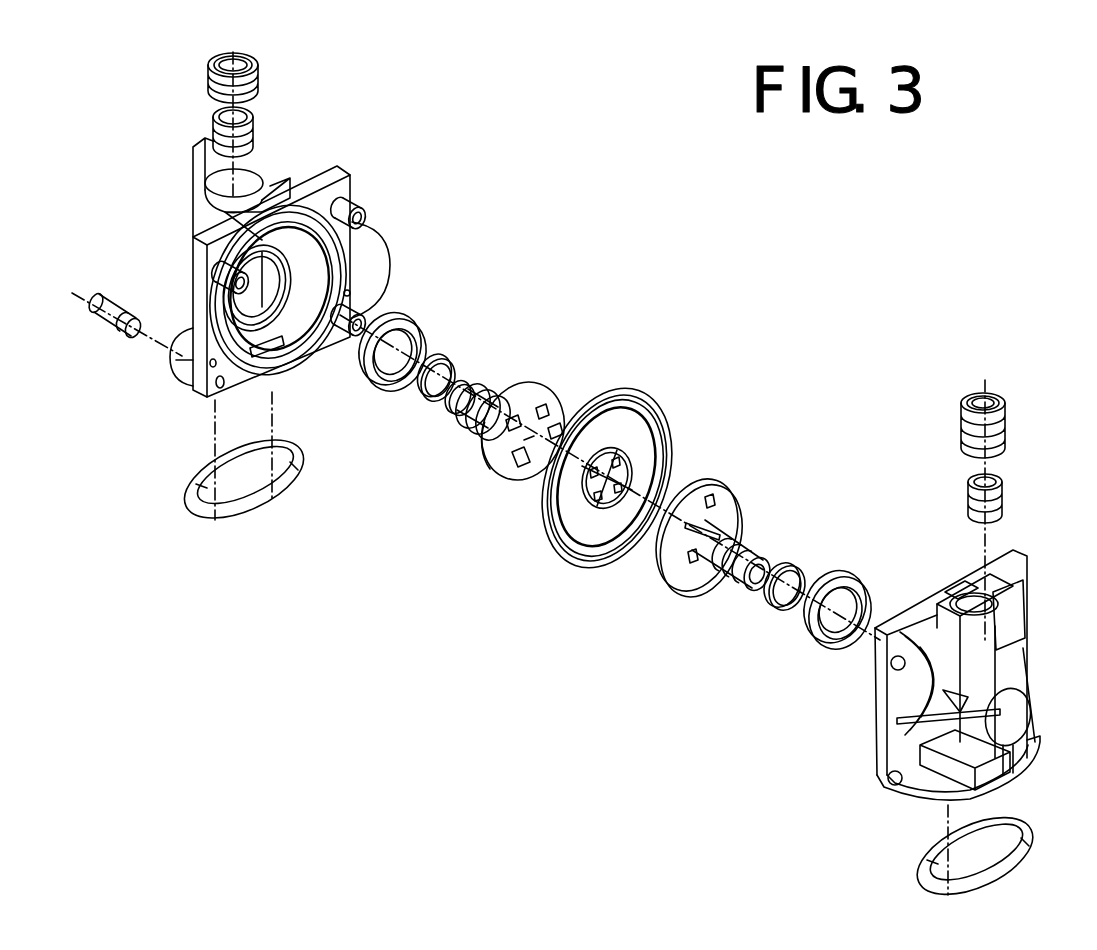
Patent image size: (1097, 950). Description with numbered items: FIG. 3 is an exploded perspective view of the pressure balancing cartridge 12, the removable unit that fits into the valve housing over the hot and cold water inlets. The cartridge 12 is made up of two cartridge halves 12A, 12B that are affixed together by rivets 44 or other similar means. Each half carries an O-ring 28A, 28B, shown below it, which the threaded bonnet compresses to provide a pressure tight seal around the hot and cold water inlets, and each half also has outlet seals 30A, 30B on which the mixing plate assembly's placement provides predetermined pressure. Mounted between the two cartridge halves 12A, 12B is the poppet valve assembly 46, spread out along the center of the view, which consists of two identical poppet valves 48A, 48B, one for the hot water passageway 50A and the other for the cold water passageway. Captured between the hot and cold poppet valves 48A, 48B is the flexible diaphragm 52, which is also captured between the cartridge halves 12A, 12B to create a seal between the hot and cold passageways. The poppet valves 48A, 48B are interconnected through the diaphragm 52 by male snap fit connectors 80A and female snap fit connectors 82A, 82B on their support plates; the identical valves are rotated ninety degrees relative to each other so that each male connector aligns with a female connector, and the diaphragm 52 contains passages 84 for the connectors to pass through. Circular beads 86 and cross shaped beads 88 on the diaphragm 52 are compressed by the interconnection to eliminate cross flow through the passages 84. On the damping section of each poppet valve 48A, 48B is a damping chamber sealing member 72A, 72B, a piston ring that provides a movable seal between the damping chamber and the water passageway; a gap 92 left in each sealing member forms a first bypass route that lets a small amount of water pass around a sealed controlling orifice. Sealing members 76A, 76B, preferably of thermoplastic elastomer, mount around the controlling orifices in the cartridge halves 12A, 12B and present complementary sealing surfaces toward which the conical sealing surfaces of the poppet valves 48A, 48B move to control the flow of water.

The pressure balancing cartridge 12 is at (559, 173).
The cartridge half 12A is at (333, 170).
The cartridge half 12B is at (1013, 550).
The O-ring 28A is at (192, 492).
The O-ring 28B is at (925, 878).
The outlet seal 30A is at (268, 63).
The outlet seal 30B is at (950, 395).
The rivets 44 is at (366, 322).
The poppet valve assembly 46 is at (561, 727).
The poppet valve 48A is at (540, 390).
The poppet valve 48B is at (712, 492).
The hot water passageway 50A is at (265, 345).
The flexible diaphragm 52 is at (640, 400).
The damping chamber sealing member 72A is at (440, 360).
The damping chamber sealing member 72B is at (793, 570).
The sealing member 76A is at (407, 322).
The sealing member 76B is at (848, 585).
The male snap fit connector 80A is at (550, 412).
The female snap fit connector 82A is at (493, 440).
The female snap fit connector 82B is at (705, 525).
The passages 84 is at (592, 502).
The circular bead 86 is at (616, 470).
The cross shaped bead 88 is at (626, 480).
The gap 92 is at (455, 408).